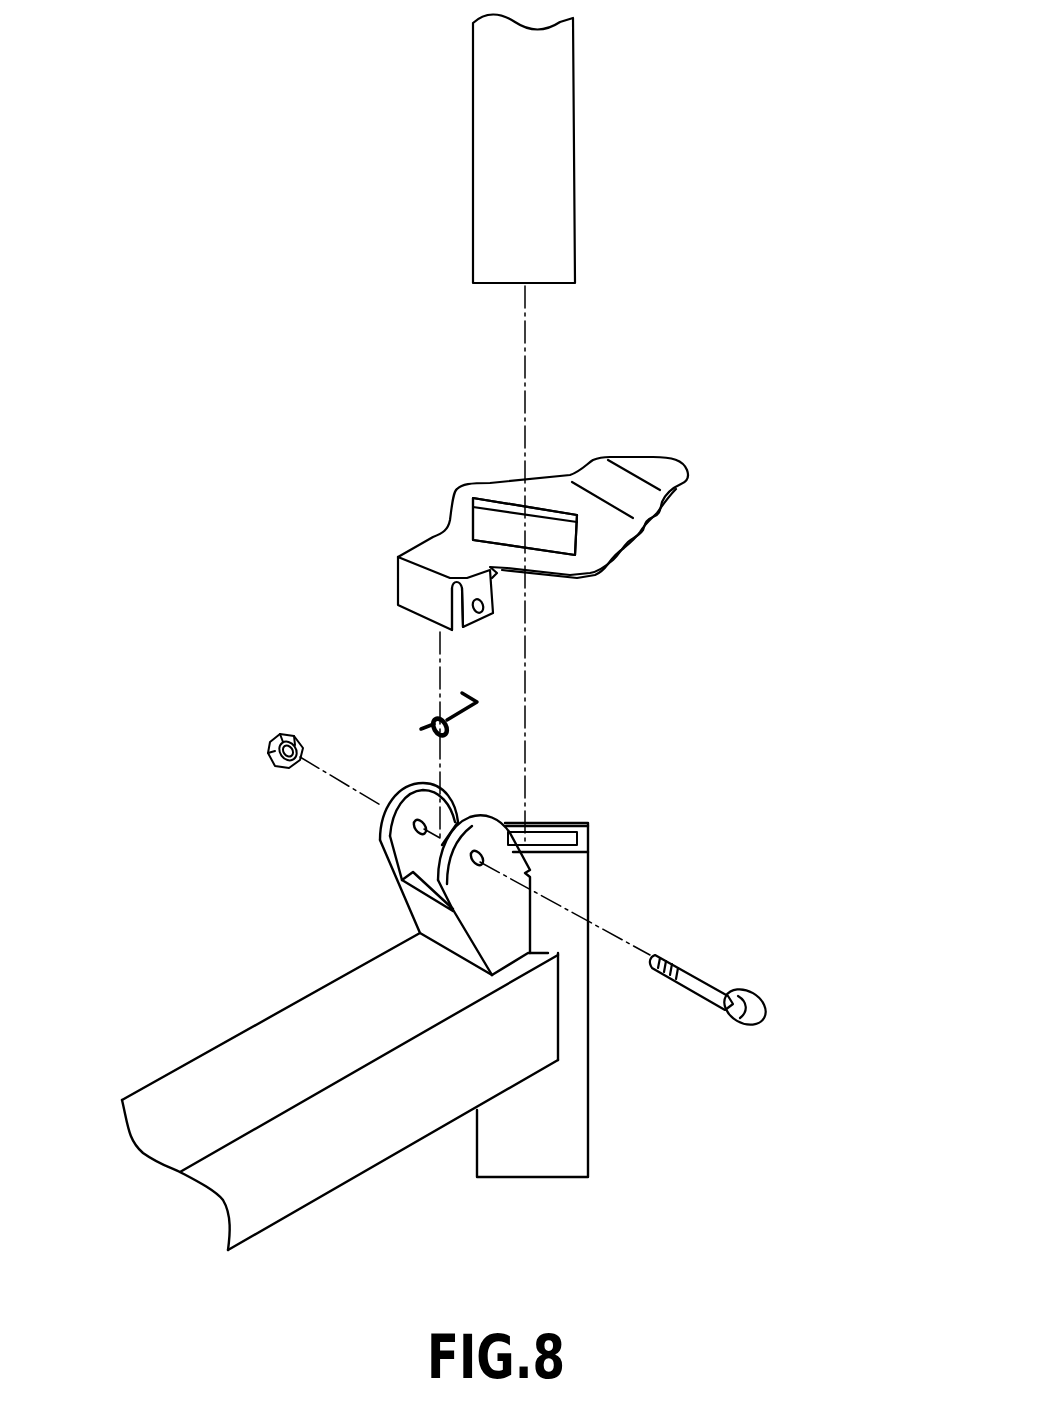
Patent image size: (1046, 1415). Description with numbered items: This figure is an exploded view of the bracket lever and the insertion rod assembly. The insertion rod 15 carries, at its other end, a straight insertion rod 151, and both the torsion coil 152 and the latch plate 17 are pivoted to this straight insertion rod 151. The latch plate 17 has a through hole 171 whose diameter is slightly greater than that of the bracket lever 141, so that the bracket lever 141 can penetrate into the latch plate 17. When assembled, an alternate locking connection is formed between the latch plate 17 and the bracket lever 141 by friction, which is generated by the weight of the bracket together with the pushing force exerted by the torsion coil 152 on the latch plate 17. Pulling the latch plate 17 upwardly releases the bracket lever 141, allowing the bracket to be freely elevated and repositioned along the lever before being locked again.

The bracket lever 141 is at (553, 165).
The latch plate 17 is at (665, 467).
The through hole 171 is at (490, 520).
The torsion coil 152 is at (430, 723).
The insertion rod 15 is at (293, 1025).
The straight insertion rod 151 is at (582, 1118).